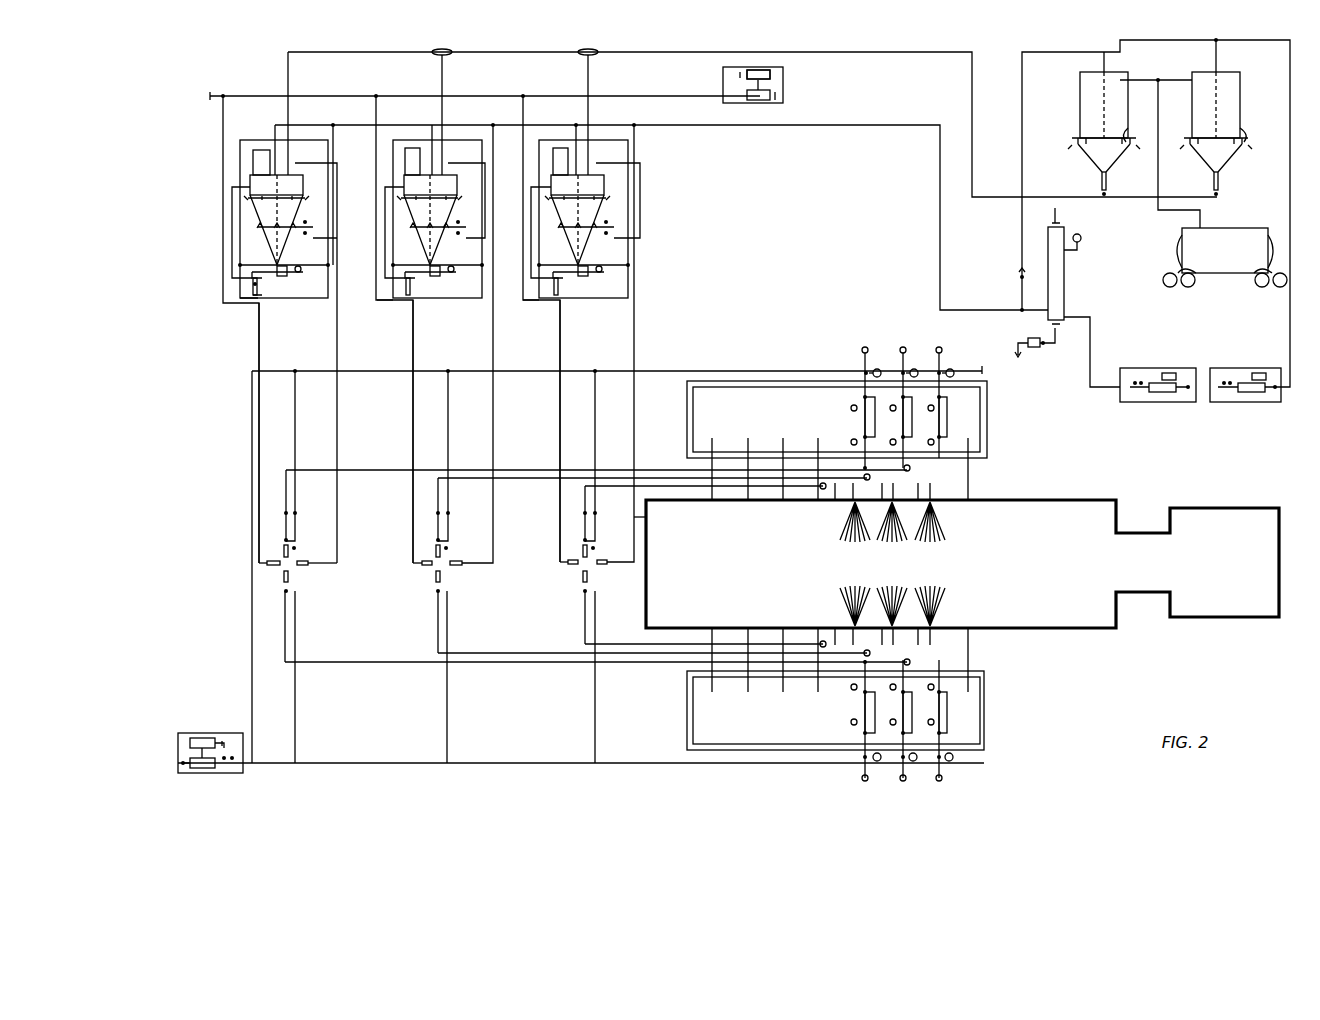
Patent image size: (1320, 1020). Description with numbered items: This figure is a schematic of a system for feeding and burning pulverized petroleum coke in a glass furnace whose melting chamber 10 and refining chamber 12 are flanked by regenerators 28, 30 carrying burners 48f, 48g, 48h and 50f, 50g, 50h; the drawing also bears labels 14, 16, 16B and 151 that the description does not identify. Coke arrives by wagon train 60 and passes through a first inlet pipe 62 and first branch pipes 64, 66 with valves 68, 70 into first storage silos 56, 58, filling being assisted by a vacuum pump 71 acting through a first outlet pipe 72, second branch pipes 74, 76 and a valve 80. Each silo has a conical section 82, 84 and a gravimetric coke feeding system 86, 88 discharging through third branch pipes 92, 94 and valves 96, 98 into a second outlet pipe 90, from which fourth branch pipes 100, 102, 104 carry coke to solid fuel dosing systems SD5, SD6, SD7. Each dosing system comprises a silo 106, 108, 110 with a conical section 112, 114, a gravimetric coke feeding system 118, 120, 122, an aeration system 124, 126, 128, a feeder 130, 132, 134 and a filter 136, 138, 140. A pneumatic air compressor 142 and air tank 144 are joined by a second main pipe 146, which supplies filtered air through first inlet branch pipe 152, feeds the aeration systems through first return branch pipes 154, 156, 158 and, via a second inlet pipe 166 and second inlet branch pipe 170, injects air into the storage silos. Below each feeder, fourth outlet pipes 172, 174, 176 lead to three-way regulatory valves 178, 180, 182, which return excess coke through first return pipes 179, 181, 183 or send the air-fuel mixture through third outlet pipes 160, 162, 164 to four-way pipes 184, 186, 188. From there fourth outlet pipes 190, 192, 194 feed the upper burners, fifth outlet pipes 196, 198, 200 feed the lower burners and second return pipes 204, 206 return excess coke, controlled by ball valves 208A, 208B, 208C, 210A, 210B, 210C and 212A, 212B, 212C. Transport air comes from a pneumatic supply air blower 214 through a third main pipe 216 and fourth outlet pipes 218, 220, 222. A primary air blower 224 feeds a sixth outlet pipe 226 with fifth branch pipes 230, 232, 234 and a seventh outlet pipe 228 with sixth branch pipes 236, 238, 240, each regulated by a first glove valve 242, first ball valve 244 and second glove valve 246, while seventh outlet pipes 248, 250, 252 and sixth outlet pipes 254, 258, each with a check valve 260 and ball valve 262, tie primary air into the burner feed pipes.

The melting chamber 10 is at (680, 613).
The refining chamber 12 is at (1065, 605).
The headbox 14 is at (1248, 595).
The forming section 16 is at (1148, 578).
The chemical supply section 16B is at (1084, 65).
The regenerator 28 is at (728, 400).
The regenerator 30 is at (755, 735).
The burner 48f is at (842, 523).
The burner 48g is at (892, 540).
The burner 48h is at (942, 528).
The burner 50f is at (840, 604).
The burner 50g is at (890, 586).
The burner 50h is at (942, 598).
The first storage silo 56 is at (1088, 114).
The first storage silo 58 is at (1190, 140).
The wagon train 60 is at (1222, 268).
The first inlet pipe 62 is at (1204, 222).
The first branch pipe 64 is at (1140, 80).
The first branch pipe 66 is at (1182, 82).
The valve 68 is at (1148, 80).
The valve 70 is at (1160, 80).
The vacuum pump 71 is at (1222, 402).
The first outlet pipe 72 is at (1290, 218).
The second branch pipe 74 is at (1104, 58).
The second branch pipe 76 is at (1232, 48).
The valve 80 is at (1238, 75).
The conical section 82 is at (1115, 152).
The conical section 84 is at (1225, 150).
The gravimetric coke feeding system 86 is at (1130, 140).
The gravimetric coke feeding system 88 is at (1246, 142).
The second outlet pipe 90 is at (1098, 197).
The third branch pipe 92 is at (1100, 182).
The third branch pipe 94 is at (1222, 195).
The valve 96 is at (1108, 180).
The valve 98 is at (1222, 180).
The fourth branch pipe 100 is at (292, 60).
The fourth branch pipe 102 is at (446, 62).
The fourth branch pipe 104 is at (590, 62).
The second series silo 106 is at (262, 184).
The second series silo 108 is at (412, 168).
The second series silo 110 is at (550, 178).
The conical section 112 is at (265, 212).
The conical section 114 is at (416, 215).
The gravimetric coke feeding system 118 is at (244, 198).
The gravimetric coke feeding system 120 is at (415, 185).
The gravimetric coke feeding system 122 is at (548, 197).
The aeration system 124 is at (307, 233).
The aeration system 126 is at (458, 236).
The aeration system 128 is at (612, 237).
The feeder 130 is at (290, 275).
The feeder 132 is at (432, 300).
The feeder 134 is at (590, 275).
The filter 136 is at (255, 160).
The filter 138 is at (410, 145).
The filter 140 is at (562, 145).
The pneumatic air compressor 142 is at (1130, 402).
The air tank 144 is at (1064, 282).
The second main pipe 146 is at (938, 200).
The inlet pipe 151 is at (450, 125).
The first inlet branch pipe 152 is at (586, 125).
The first return branch pipe 154 is at (334, 125).
The first return branch pipe 156 is at (494, 125).
The first return branch pipe 158 is at (635, 125).
The third outlet pipe 160 is at (258, 340).
The third outlet pipe 162 is at (390, 358).
The third outlet pipe 164 is at (556, 340).
The second inlet pipe 166 is at (1022, 125).
The second inlet branch pipe 170 is at (1210, 50).
The fourth outlet pipe 172 is at (252, 282).
The fourth outlet pipe 174 is at (414, 330).
The fourth outlet pipe 176 is at (560, 300).
The three-way regulatory valve 178 is at (253, 296).
The first return pipe 179 is at (232, 245).
The three-way regulatory valve 180 is at (388, 310).
The first return pipe 181 is at (384, 232).
The three-way regulatory valve 182 is at (541, 300).
The first return pipe 183 is at (531, 250).
The four-way pipe 184 is at (278, 125).
The four-way pipe 186 is at (422, 566).
The four-way pipe 188 is at (568, 564).
The fourth outlet pipe 190 is at (372, 470).
The fourth outlet pipe 192 is at (535, 478).
The fourth outlet pipe 194 is at (660, 486).
The fifth outlet pipe 196 is at (350, 662).
The fifth outlet pipe 198 is at (500, 653).
The fifth outlet pipe 200 is at (607, 650).
The second return pipe 204 is at (505, 508).
The second return pipe 206 is at (650, 520).
The ball valve 208A is at (282, 548).
The ball valve 208B is at (305, 568).
The ball valve 208C is at (282, 578).
The ball valve 210A is at (434, 550).
The ball valve 210B is at (458, 568).
The ball valve 210C is at (434, 578).
The ball valve 212A is at (581, 550).
The ball valve 212B is at (602, 568).
The ball valve 212C is at (580, 578).
The pneumatic supply air blower 214 is at (783, 90).
The third main pipe 216 is at (722, 72).
The fourth outlet pipe 218 is at (215, 103).
The fourth outlet pipe 220 is at (378, 96).
The fourth outlet pipe 222 is at (525, 96).
The primary air blower 224 is at (222, 775).
The sixth outlet pipe 226 is at (370, 763).
The seventh outlet pipe 228 is at (252, 456).
The fifth branch pipe 230 is at (860, 770).
The fifth branch pipe 232 is at (898, 768).
The fifth branch pipe 234 is at (945, 768).
The sixth branch pipe 236 is at (862, 348).
The sixth branch pipe 238 is at (902, 347).
The sixth branch pipe 240 is at (941, 348).
The first glove valve 242 is at (862, 400).
The first ball valve 244 is at (860, 425).
The second glove valve 246 is at (850, 408).
The seventh outlet pipe 248 is at (295, 735).
The seventh outlet pipe 250 is at (447, 735).
The seventh outlet pipe 252 is at (595, 735).
The sixth outlet pipe 254 is at (295, 428).
The sixth outlet pipe 258 is at (595, 422).
The check valve 260 is at (296, 505).
The ball valve 262 is at (300, 518).
The solid fuel dosing system SD5 is at (300, 300).
The solid fuel dosing system SD6 is at (455, 300).
The solid fuel dosing system SD7 is at (590, 300).